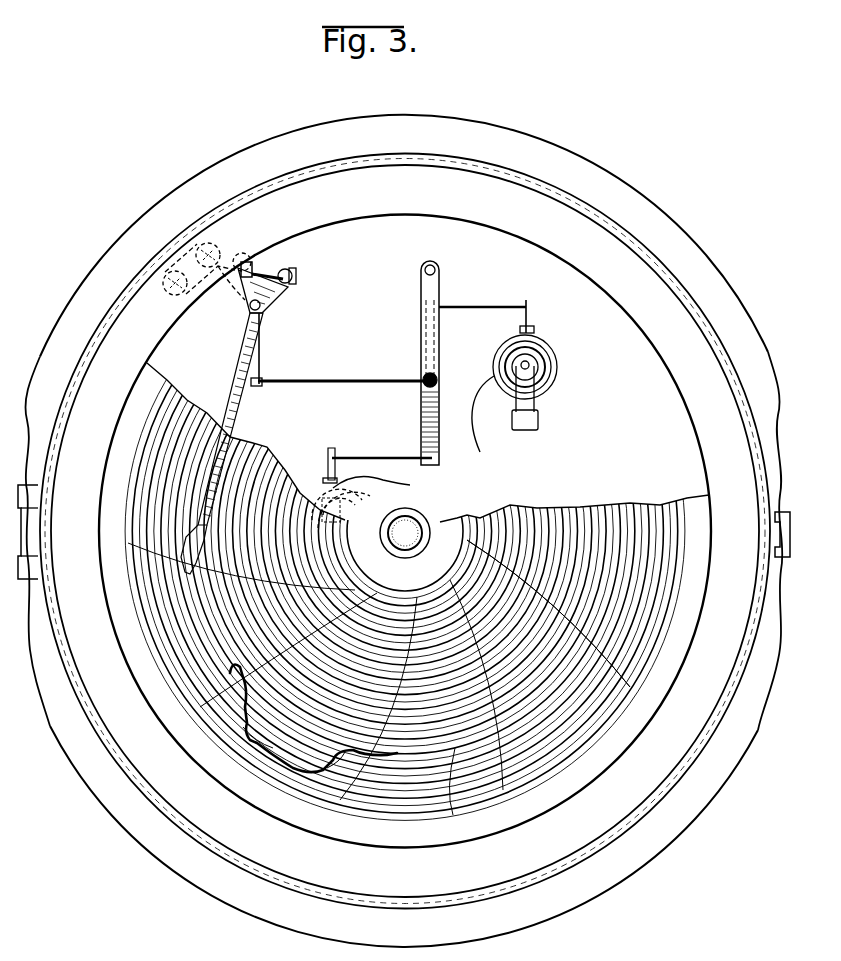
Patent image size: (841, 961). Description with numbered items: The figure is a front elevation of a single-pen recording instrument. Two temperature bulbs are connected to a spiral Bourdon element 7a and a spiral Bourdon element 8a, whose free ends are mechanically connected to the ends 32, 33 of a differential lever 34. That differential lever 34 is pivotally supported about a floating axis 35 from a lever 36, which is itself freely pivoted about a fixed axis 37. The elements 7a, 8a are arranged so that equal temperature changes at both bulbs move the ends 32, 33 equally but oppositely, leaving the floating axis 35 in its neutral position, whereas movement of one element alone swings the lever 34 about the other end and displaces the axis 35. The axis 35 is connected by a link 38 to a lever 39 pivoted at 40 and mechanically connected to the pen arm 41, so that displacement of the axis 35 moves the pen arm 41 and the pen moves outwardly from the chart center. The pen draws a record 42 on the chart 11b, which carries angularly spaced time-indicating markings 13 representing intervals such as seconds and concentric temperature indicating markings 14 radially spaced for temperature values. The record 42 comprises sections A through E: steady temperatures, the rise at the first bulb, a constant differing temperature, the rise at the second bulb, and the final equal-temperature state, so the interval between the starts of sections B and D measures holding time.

The spiral Bourdon element 7a is at (563, 370).
The spiral Bourdon element 8a is at (347, 483).
The chart 11b is at (600, 680).
The time-indicating markings 13 is at (373, 600).
The concentric temperature indicating markings 14 is at (467, 791).
The end of differential lever 32 is at (439, 306).
The end of differential lever 33 is at (432, 461).
The differential lever 34 is at (436, 428).
The floating axis 35 is at (436, 375).
The lever 36 is at (421, 326).
The fixed axis 37 is at (433, 268).
The link 38 is at (334, 380).
The lever 39 is at (259, 352).
The pivot 40 is at (270, 295).
The pen arm 41 is at (236, 397).
The record 42 is at (280, 748).